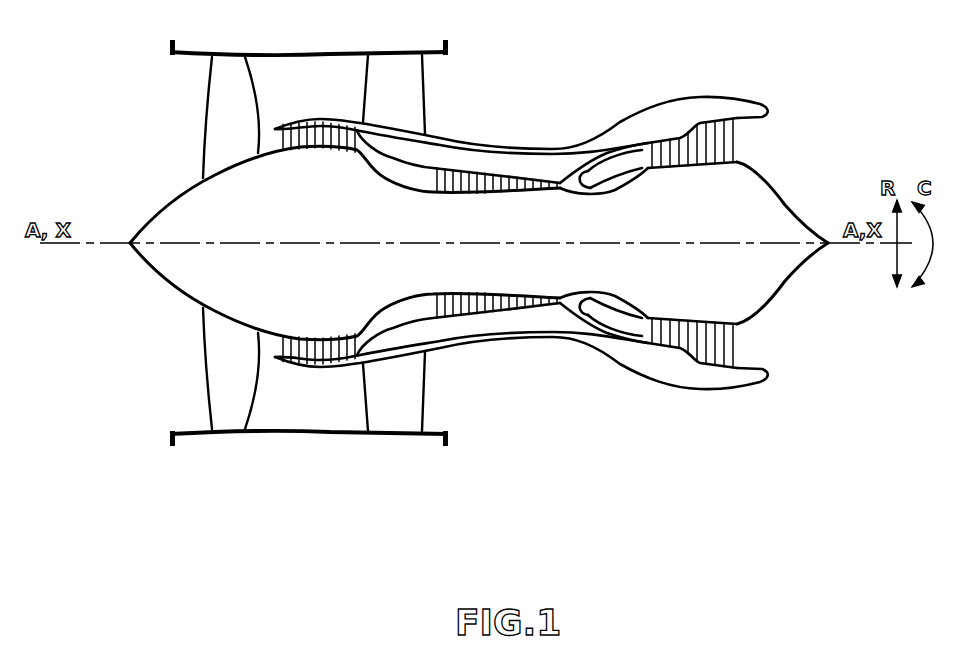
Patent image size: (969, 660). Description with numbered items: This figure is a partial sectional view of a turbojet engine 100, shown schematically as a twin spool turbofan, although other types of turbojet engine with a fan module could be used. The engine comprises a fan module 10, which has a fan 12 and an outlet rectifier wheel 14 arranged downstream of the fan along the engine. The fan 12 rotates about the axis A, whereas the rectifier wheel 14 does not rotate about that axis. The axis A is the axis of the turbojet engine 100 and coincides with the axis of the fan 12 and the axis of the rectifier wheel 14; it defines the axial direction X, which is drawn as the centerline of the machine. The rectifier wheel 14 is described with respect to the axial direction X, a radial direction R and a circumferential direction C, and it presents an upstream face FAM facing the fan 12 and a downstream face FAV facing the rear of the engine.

The fan module 10 is at (100, 394).
The fan 12 is at (177, 120).
The outlet rectifier wheel 14 is at (445, 90).
The turbojet engine 100 is at (558, 460).
The upstream face FAM is at (362, 402).
The downstream face FAV is at (425, 395).